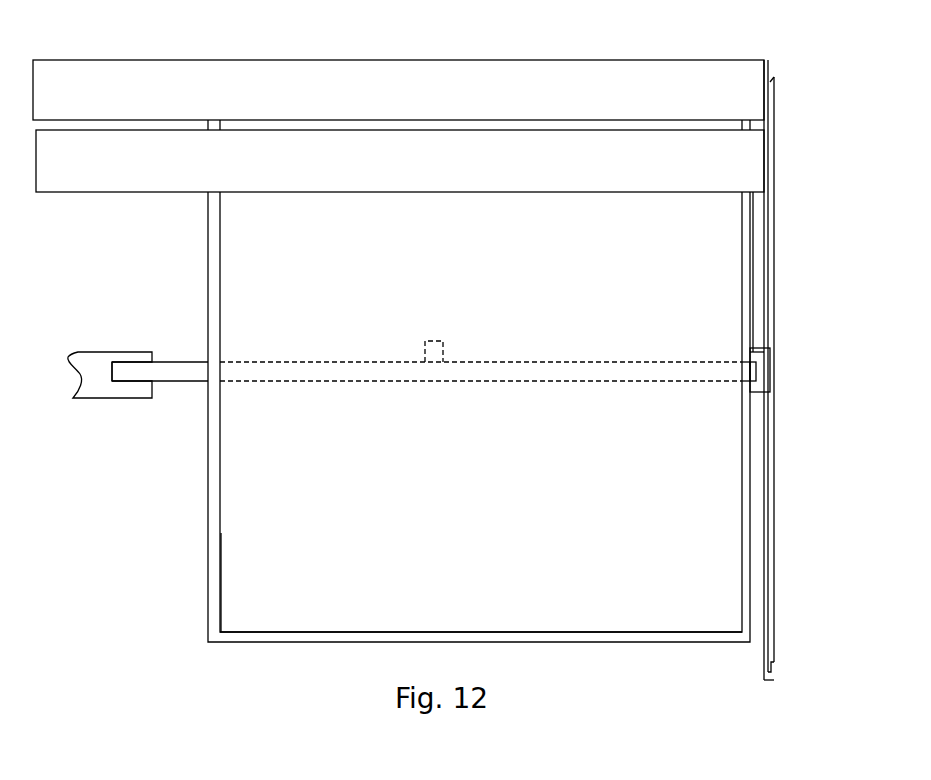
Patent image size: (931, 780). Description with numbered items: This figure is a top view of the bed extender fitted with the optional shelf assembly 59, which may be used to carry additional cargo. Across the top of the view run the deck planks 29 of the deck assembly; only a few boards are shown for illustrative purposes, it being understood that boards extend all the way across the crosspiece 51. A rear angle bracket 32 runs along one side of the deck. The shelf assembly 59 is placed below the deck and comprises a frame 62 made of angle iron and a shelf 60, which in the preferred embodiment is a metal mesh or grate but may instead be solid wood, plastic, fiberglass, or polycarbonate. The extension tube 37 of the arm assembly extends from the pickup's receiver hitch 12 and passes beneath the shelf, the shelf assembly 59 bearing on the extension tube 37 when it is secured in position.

The receiver hitch 12 is at (93, 357).
The deck planks 29 is at (463, 153).
The rear angle bracket 32 is at (757, 248).
The extension tube 37 is at (300, 365).
The crosspiece 51 is at (767, 363).
The shelf assembly 59 is at (443, 341).
The shelf 60 is at (337, 602).
The frame 62 is at (217, 553).